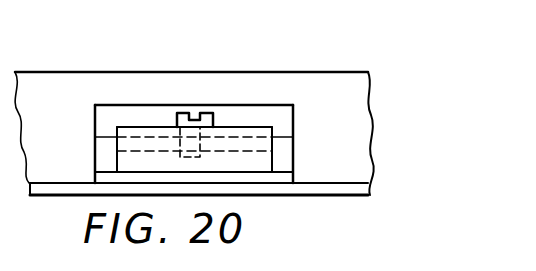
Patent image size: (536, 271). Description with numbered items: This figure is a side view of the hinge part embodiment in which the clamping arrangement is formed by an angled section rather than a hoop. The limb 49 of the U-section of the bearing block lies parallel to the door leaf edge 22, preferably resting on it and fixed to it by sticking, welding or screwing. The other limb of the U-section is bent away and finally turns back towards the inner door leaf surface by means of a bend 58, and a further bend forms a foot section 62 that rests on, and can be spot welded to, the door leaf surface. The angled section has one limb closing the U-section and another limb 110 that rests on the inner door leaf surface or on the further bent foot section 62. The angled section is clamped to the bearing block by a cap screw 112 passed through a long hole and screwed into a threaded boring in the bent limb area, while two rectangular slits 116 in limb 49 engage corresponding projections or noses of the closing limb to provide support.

The door leaf edge 22 is at (58, 83).
The limb of the U-section 49 is at (285, 117).
The bend 58 is at (285, 148).
The foot section 62 is at (253, 179).
The limb of the angled section 110 is at (257, 161).
The cap screw 112 is at (205, 114).
The rectangular slits 116 is at (137, 130).